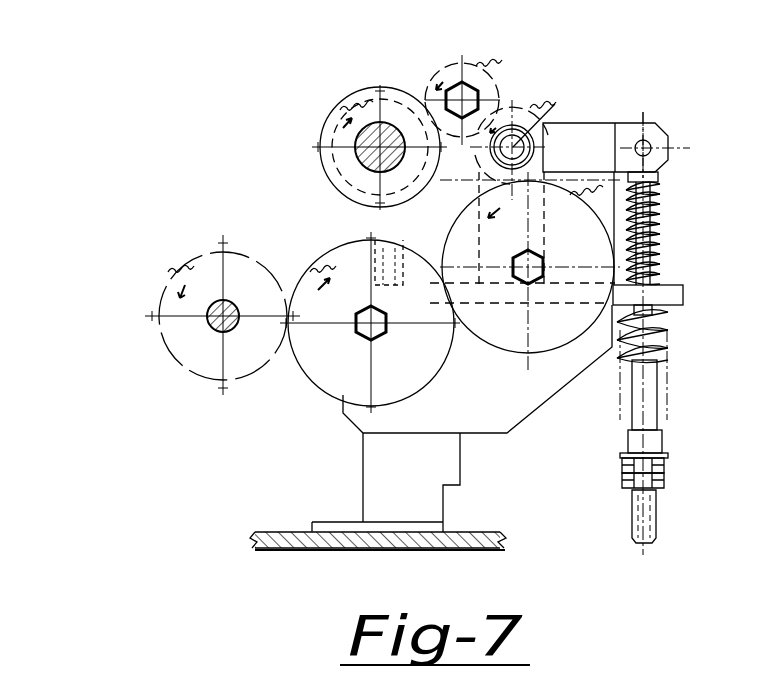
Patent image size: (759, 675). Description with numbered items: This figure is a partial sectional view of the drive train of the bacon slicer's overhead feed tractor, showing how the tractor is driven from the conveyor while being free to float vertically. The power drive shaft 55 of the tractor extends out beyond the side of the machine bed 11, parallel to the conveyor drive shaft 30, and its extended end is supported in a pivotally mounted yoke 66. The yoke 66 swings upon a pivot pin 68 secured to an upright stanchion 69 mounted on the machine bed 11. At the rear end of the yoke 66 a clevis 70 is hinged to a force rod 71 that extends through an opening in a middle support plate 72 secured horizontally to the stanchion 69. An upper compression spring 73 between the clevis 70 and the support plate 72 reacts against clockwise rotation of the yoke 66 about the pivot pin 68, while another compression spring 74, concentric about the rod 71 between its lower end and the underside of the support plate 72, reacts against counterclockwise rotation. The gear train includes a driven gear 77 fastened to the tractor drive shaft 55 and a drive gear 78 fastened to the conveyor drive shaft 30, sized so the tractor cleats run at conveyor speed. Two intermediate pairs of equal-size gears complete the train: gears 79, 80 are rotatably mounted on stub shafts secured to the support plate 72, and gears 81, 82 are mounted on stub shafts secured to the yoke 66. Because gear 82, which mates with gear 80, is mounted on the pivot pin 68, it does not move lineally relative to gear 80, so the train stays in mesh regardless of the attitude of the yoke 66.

The machine bed 11 is at (497, 553).
The conveyor drive shaft 30 is at (207, 310).
The tractor drive shaft 55 is at (360, 165).
The yoke 66 is at (585, 120).
The pivot pin 68 is at (555, 104).
The stanchion 69 is at (492, 188).
The clevis 70 is at (668, 142).
The force rod 71 is at (658, 215).
The middle support plate 72 is at (683, 296).
The upper compression spring 73 is at (656, 262).
The compression spring 74 is at (668, 350).
The driven gear 77 is at (350, 100).
The drive gear 78 is at (184, 258).
The intermediate gear 79 is at (310, 370).
The intermediate gear 80 is at (545, 355).
The intermediate gear 81 is at (482, 75).
The intermediate gear 82 is at (513, 122).